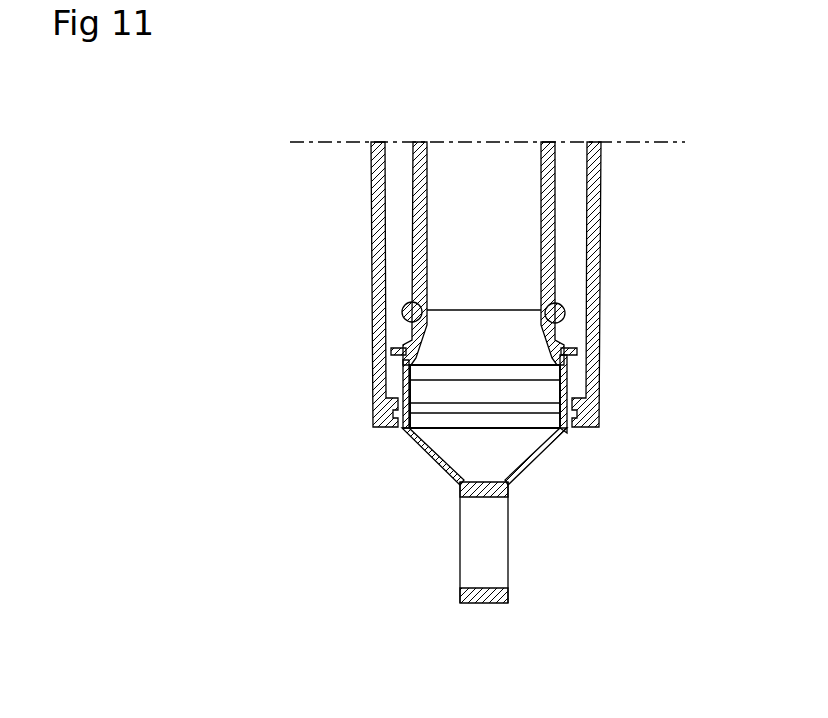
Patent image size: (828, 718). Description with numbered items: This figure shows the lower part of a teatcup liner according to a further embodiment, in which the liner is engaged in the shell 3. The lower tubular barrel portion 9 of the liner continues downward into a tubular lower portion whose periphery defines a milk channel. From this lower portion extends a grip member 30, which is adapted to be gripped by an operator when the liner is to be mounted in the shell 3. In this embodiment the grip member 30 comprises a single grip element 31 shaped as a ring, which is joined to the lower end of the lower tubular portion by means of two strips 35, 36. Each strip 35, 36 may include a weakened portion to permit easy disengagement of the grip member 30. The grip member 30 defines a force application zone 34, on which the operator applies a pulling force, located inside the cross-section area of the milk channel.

The shell 3 is at (595, 267).
The lower tubular barrel portion 9 is at (553, 202).
The grip member 30 is at (530, 550).
The grip element 31 is at (460, 593).
The force application zone 34 is at (488, 586).
The strip 35 is at (533, 462).
The strip 36 is at (423, 453).